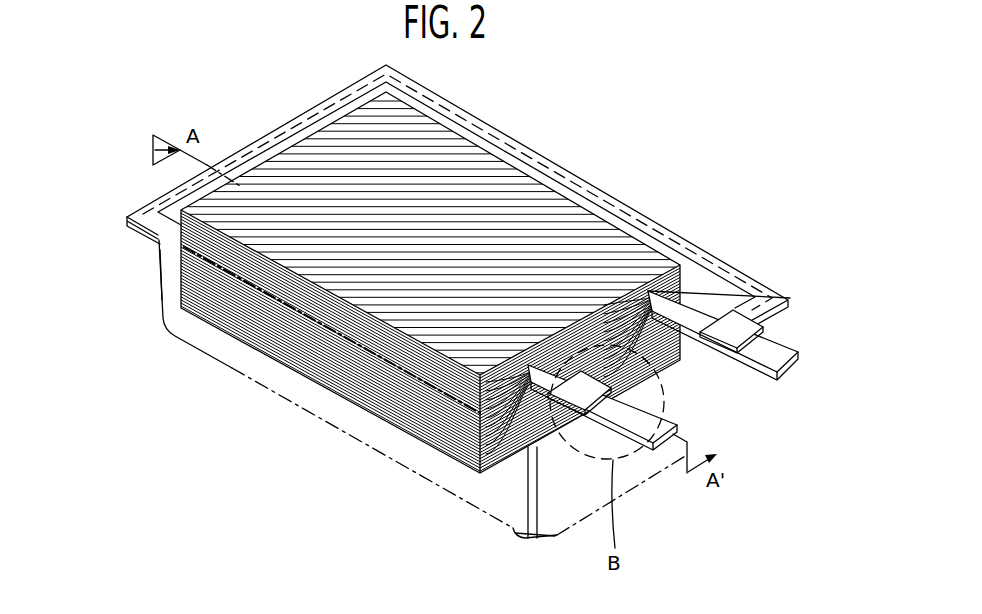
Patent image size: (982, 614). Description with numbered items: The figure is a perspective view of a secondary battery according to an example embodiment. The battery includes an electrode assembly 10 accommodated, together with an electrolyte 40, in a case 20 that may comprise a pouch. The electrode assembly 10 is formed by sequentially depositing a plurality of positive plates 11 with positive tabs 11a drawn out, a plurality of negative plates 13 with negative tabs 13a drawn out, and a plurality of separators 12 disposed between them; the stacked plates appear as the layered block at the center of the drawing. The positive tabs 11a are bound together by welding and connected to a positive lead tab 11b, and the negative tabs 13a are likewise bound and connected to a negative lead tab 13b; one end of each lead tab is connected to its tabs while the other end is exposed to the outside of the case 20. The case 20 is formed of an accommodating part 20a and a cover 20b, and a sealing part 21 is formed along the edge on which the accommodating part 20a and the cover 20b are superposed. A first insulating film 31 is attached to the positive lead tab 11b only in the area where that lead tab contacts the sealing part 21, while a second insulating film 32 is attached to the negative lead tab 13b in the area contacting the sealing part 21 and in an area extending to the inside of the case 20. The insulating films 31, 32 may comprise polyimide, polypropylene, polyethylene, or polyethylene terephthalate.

The electrode assembly 10 is at (430, 307).
The positive plate 11 is at (380, 318).
The separator 12 is at (410, 348).
The negative plate 13 is at (440, 366).
The positive tab 11a is at (757, 326).
The positive lead tab 11b is at (788, 356).
The negative tab 13a is at (527, 487).
The negative lead tab 13b is at (668, 445).
The case 20 is at (197, 403).
The accommodating part 20a is at (192, 330).
The cover 20b is at (122, 215).
The sealing part 21 is at (768, 299).
The first insulating film 31 is at (762, 325).
The second insulating film 32 is at (568, 425).
The electrolyte 40 is at (507, 494).